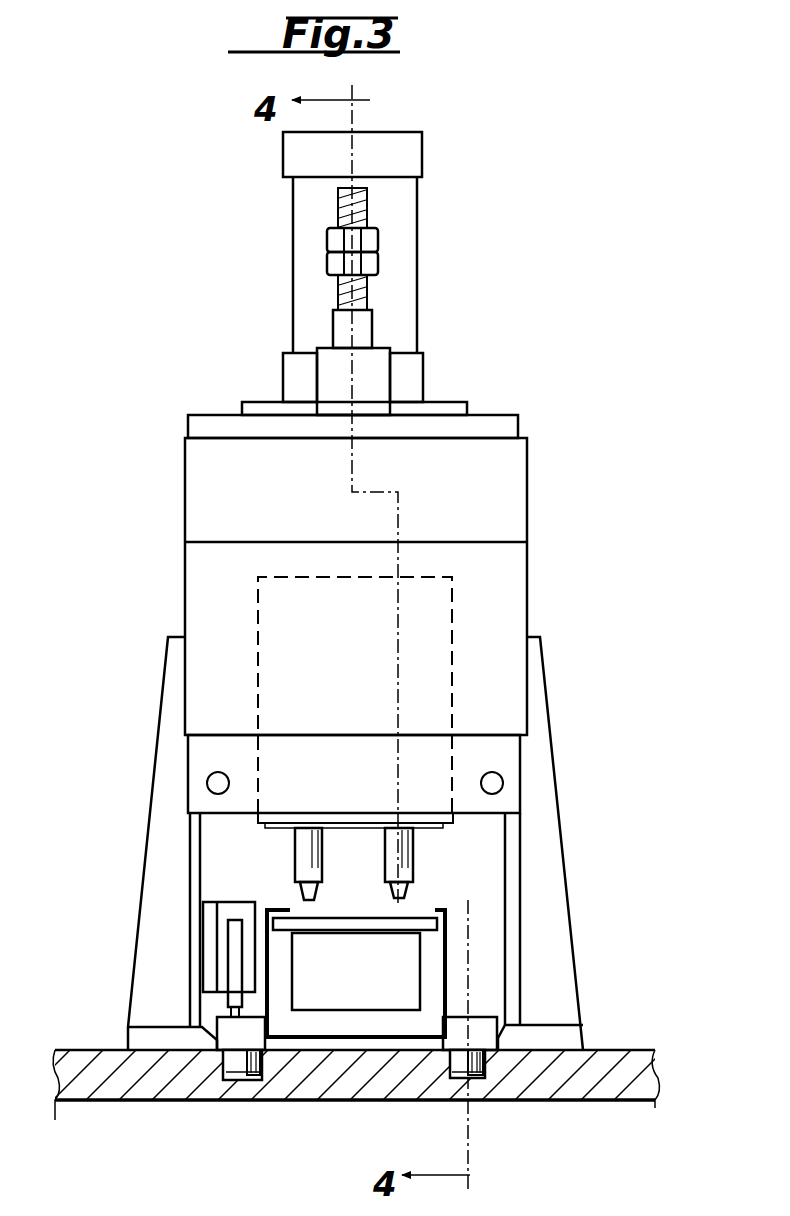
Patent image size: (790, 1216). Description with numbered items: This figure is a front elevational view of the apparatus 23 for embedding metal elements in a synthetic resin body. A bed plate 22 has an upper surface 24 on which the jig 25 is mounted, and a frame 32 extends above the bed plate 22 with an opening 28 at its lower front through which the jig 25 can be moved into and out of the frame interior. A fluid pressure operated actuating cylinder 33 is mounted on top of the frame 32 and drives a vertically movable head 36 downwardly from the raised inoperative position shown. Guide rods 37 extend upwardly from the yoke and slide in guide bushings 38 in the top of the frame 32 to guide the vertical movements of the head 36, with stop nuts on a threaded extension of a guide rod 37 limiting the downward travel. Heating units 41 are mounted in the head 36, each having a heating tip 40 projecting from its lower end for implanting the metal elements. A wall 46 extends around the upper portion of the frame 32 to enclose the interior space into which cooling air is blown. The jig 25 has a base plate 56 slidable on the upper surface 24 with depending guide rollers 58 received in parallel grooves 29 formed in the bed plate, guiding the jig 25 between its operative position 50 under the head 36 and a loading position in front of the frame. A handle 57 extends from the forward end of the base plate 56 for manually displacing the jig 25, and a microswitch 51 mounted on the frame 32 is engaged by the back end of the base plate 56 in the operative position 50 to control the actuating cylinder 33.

The bed plate 22 is at (655, 1080).
The apparatus 23 is at (488, 352).
The upper surface 24 is at (362, 1044).
The jig 25 is at (448, 958).
The opening 28 is at (490, 848).
The grooves 29 is at (250, 1072).
The frame 32 is at (496, 420).
The actuating cylinder 33 is at (417, 222).
The head 36 is at (452, 640).
The guide rods 37 is at (367, 328).
The guide bushings 38 is at (380, 378).
The heating tip 40 is at (301, 890).
The heating units 41 is at (322, 856).
The wall 46 is at (513, 558).
The operative position 50 is at (372, 913).
The microswitch 51 is at (232, 902).
The base plate 56 is at (467, 1016).
The handle 57 is at (370, 930).
The guide rollers 58 is at (228, 1078).